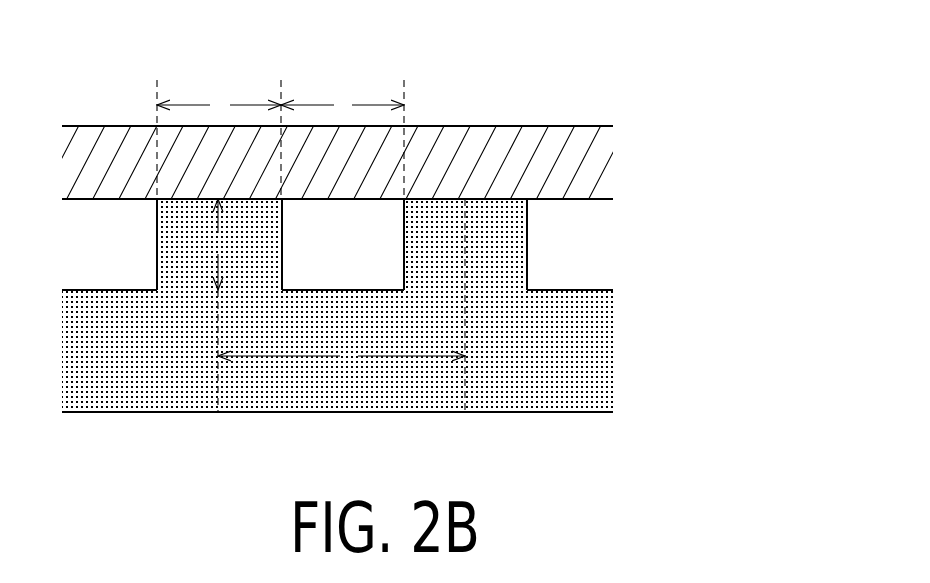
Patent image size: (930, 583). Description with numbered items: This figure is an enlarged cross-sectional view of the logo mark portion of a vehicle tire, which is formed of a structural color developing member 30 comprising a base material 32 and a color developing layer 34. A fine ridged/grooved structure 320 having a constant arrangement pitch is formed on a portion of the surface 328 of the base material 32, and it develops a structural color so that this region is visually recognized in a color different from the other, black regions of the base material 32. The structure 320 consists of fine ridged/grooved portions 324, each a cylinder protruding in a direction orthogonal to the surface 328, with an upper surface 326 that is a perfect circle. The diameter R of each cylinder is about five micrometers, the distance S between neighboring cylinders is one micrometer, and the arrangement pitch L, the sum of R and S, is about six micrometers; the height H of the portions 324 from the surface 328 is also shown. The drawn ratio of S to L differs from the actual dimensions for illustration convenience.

The structural color developing member 30 is at (564, 91).
The base material 32 is at (590, 373).
The color developing layer 34 is at (600, 156).
The fine ridged/grooved structure 320 is at (558, 220).
The fine ridged/grooved portions 324 is at (282, 240).
The upper surface 326 is at (490, 199).
The surface 328 is at (570, 291).